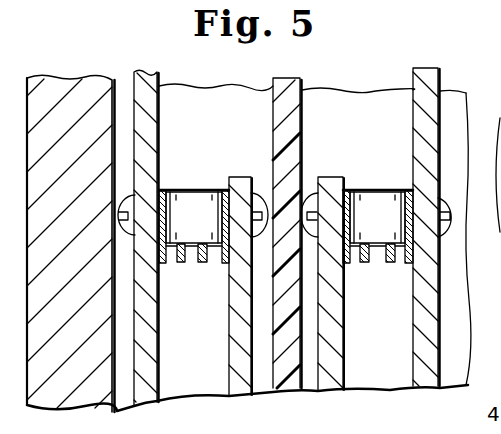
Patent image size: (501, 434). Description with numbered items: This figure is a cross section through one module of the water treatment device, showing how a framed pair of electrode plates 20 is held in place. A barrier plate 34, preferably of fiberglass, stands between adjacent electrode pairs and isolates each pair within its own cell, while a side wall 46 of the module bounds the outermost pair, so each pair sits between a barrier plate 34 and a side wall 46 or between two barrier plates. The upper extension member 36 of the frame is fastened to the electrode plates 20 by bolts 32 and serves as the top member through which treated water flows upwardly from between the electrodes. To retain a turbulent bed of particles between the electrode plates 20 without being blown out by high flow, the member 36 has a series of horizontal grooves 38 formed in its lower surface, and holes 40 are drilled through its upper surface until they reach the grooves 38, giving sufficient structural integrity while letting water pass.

The electrode plates 20 is at (197, 348).
The bolts 32 is at (252, 195).
The barrier plate 34 is at (298, 83).
The upper extension member 36 is at (192, 190).
The horizontal grooves 38 is at (190, 261).
The holes 40 is at (205, 224).
The side walls 46 is at (62, 388).